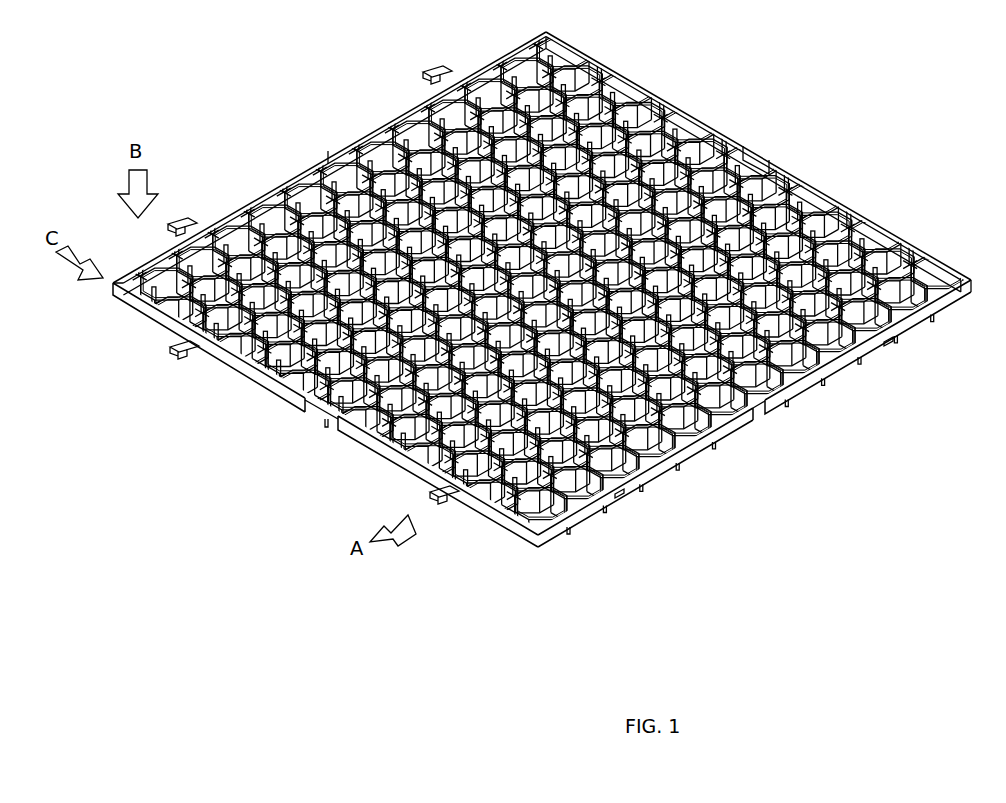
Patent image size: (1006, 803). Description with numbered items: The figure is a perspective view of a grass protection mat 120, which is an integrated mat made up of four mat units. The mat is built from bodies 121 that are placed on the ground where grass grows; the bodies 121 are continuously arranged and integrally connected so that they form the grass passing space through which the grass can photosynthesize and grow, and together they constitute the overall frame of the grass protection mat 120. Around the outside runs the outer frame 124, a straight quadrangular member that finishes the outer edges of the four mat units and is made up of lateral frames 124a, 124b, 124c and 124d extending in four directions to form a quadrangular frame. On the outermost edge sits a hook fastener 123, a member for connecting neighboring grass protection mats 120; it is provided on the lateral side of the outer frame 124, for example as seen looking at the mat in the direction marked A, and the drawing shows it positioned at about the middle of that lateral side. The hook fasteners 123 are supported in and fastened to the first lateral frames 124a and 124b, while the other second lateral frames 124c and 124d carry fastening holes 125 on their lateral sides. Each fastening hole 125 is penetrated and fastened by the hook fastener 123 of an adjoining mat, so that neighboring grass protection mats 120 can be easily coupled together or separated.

The grass protection mat 120 is at (736, 16).
The bodies 121 is at (603, 490).
The hook fastener 123 is at (440, 500).
The outer frame 124 is at (268, 178).
The first lateral frame 124a is at (235, 376).
The first lateral frame 124b is at (396, 82).
The second lateral frame 124c is at (786, 161).
The second lateral frame 124d is at (797, 399).
The fastening hole 125 is at (634, 486).